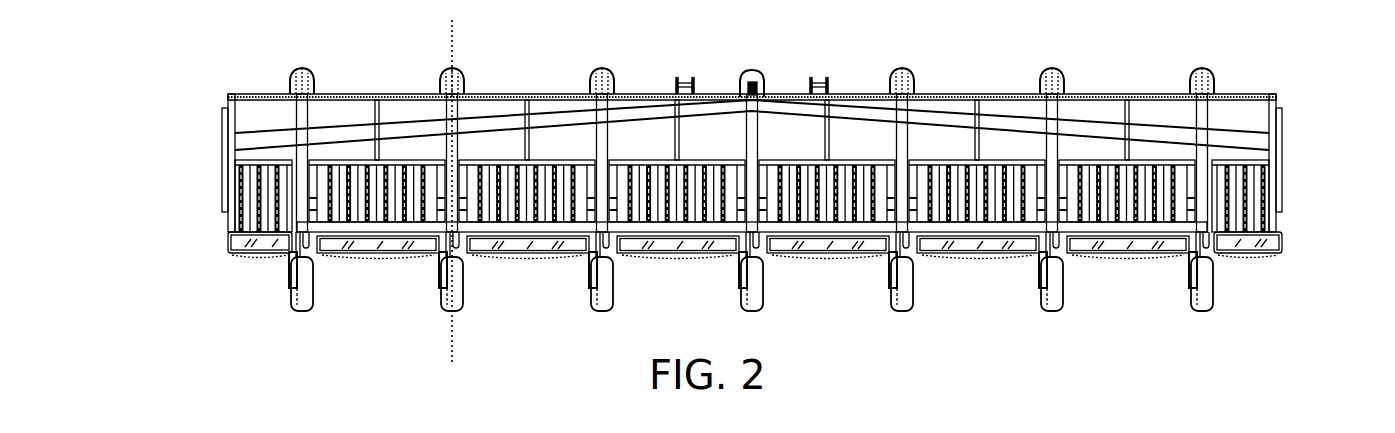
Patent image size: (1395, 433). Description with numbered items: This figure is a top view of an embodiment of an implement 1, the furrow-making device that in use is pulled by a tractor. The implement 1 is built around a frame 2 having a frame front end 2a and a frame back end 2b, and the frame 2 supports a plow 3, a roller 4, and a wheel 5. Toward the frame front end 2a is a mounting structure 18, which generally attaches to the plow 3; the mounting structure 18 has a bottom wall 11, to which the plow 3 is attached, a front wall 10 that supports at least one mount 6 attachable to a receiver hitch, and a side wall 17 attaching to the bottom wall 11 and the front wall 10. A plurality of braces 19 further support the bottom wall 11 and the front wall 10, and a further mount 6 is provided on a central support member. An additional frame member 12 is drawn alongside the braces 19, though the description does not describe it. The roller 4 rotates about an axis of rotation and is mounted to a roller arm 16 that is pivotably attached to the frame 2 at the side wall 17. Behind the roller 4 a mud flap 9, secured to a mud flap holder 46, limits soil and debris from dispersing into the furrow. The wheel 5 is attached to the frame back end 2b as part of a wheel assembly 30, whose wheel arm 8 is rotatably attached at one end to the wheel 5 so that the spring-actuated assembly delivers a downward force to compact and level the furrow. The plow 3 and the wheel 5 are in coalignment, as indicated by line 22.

The implement 1 is at (1286, 54).
The frame 2 is at (1326, 107).
The frame front end 2a is at (204, 88).
The frame back end 2b is at (206, 268).
The plow 3 is at (309, 80).
The roller 4 is at (214, 215).
The wheel 5 is at (302, 311).
The mount 6 is at (682, 65).
The wheel arm 8 is at (289, 262).
The mud flap 9 is at (372, 254).
The front wall 10 is at (527, 95).
The bottom wall 11 is at (483, 107).
The upper diagonal brace 12 is at (399, 127).
The roller arm 16 is at (224, 147).
The side wall 17 is at (228, 104).
The mounting structure 18 is at (250, 80).
The braces 19 is at (375, 108).
The line 22 is at (454, 353).
The wheel assembly 30 is at (319, 263).
The mud flap holder 46 is at (1010, 244).